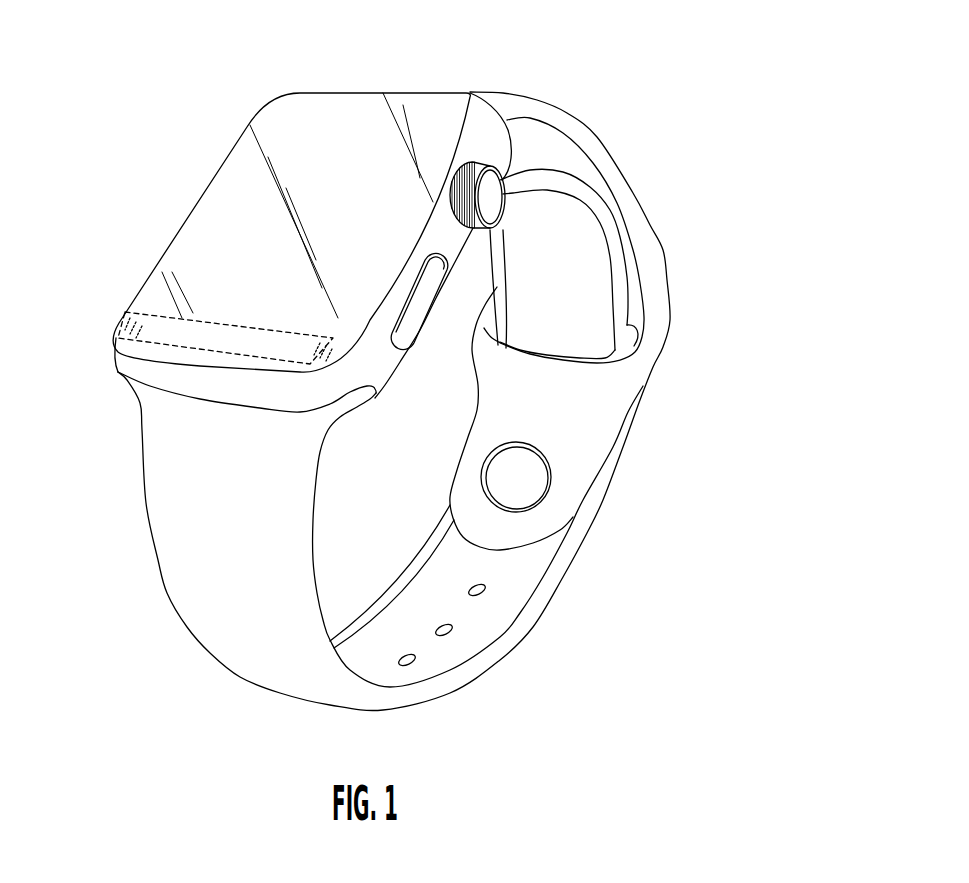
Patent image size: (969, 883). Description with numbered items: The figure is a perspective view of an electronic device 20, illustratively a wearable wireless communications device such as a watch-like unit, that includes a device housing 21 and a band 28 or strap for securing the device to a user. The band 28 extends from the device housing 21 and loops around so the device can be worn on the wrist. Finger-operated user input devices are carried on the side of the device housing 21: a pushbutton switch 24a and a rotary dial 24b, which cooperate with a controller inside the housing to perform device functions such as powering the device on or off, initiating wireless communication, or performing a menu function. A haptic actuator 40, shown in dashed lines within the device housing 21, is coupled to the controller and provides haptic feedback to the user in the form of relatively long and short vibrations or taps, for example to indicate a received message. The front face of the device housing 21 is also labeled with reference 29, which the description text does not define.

The electronic device 20 is at (151, 86).
The device housing 21 is at (183, 223).
The pushbutton switch 24a is at (423, 298).
The rotary dial 24b is at (480, 191).
The band 28 is at (193, 550).
The display 29 is at (195, 258).
The haptic actuator 40 is at (163, 340).